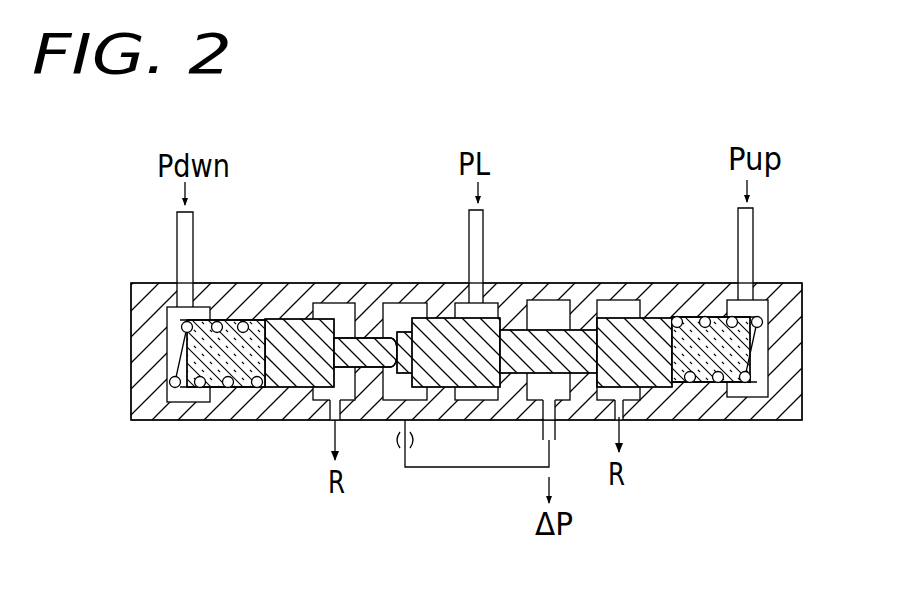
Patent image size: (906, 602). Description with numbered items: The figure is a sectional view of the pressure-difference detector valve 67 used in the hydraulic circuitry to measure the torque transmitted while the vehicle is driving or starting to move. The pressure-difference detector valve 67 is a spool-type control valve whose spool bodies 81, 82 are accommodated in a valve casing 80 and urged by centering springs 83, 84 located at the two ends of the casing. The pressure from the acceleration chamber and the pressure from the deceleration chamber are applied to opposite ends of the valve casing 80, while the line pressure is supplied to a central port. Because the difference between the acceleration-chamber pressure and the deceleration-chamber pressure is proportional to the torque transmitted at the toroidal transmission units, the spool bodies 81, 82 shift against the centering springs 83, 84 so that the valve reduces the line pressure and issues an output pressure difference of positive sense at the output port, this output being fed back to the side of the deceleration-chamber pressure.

The pressure-difference detector valve 67 is at (600, 277).
The valve casing 80 is at (285, 300).
The spool body 81 is at (300, 365).
The spool body 82 is at (650, 355).
The centering spring 83 is at (230, 385).
The centering spring 84 is at (722, 380).